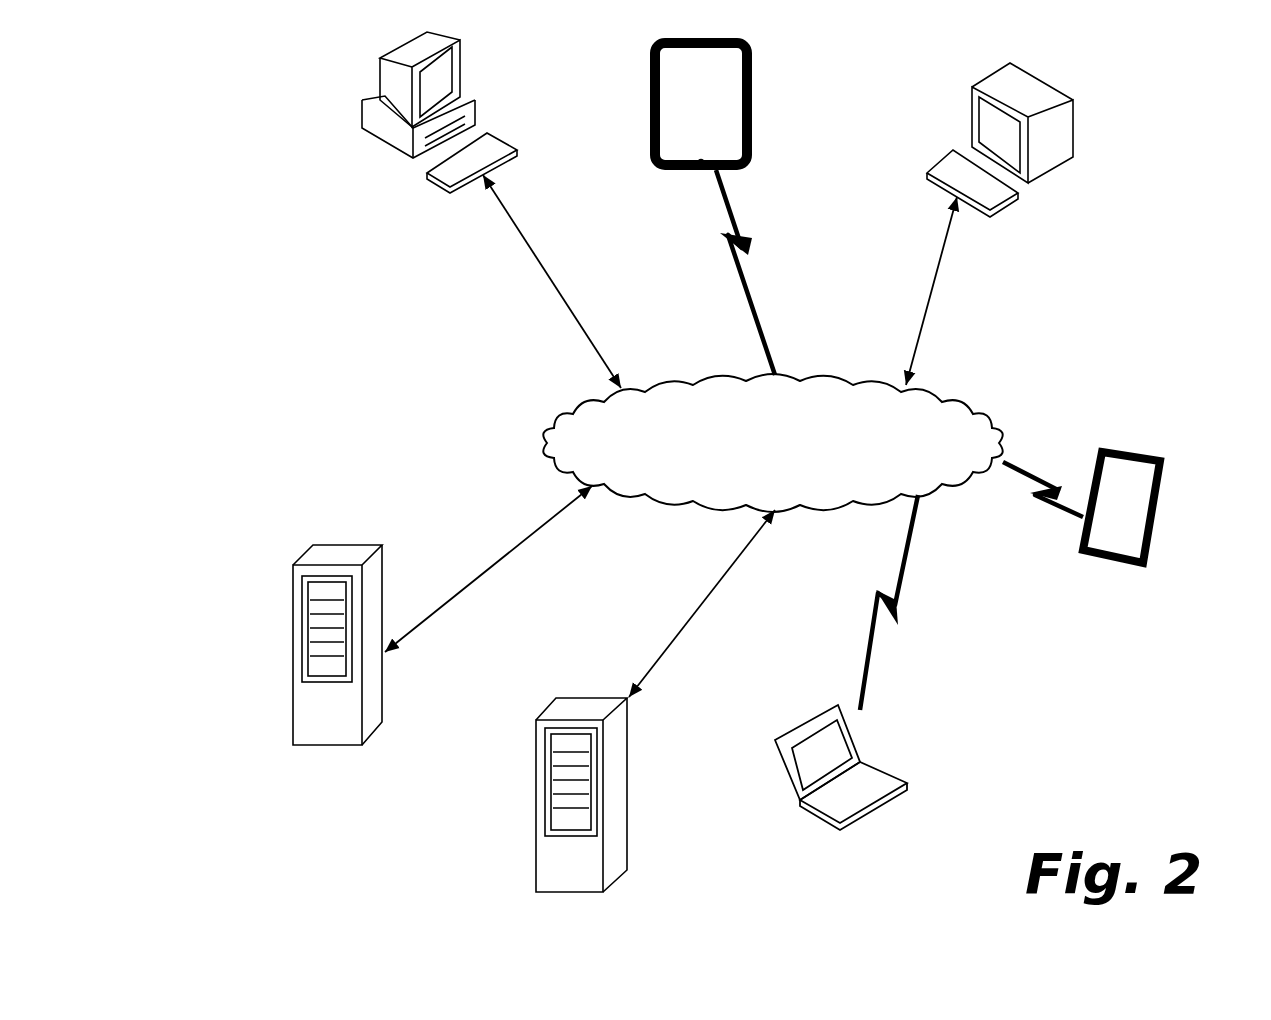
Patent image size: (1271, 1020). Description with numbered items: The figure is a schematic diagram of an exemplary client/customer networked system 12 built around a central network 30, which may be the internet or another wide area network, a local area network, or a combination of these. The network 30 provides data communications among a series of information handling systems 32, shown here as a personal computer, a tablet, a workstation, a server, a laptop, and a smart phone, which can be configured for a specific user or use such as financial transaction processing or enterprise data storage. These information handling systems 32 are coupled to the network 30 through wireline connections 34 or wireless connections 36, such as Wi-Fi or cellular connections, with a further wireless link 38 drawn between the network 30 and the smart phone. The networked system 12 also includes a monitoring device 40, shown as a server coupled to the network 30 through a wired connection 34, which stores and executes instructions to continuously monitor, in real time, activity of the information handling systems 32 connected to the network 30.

The client/customer networked system 12 is at (245, 414).
The network 30 is at (822, 378).
The information handling systems 32 is at (462, 42).
The wireline connections 34 is at (540, 257).
The wireless connections 36 is at (748, 298).
The wireless communication link 38 is at (1040, 472).
The monitoring devices 40 is at (628, 842).